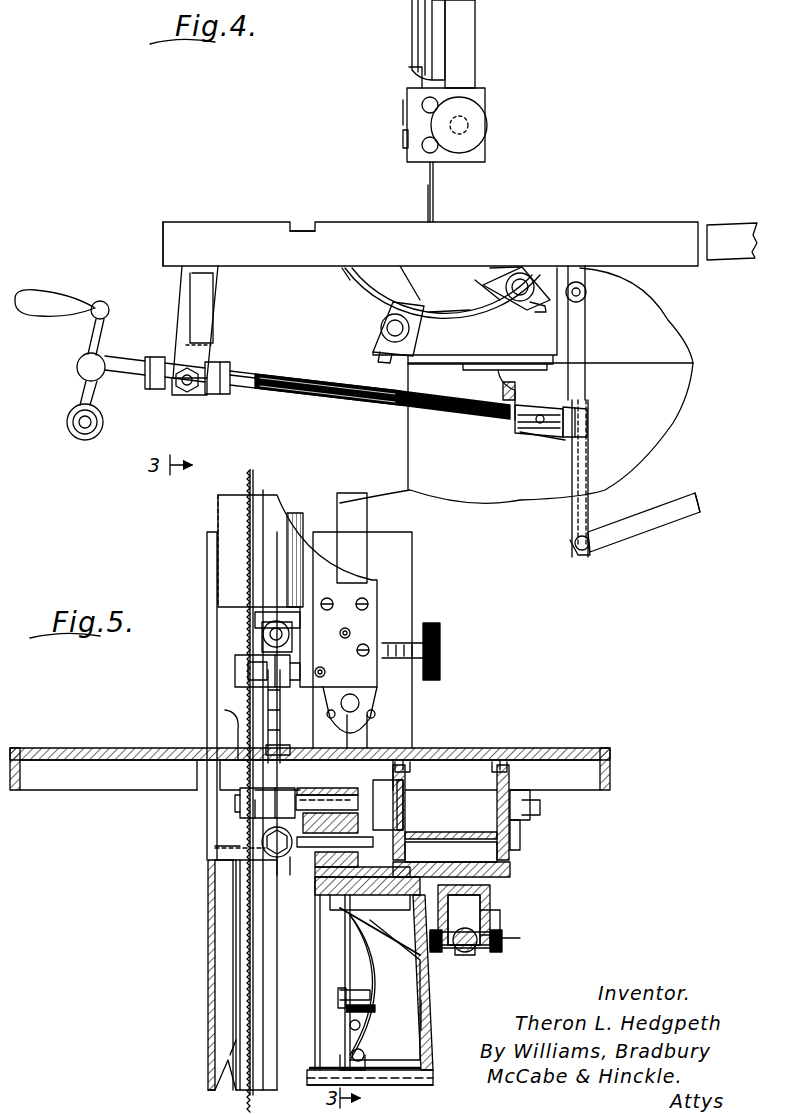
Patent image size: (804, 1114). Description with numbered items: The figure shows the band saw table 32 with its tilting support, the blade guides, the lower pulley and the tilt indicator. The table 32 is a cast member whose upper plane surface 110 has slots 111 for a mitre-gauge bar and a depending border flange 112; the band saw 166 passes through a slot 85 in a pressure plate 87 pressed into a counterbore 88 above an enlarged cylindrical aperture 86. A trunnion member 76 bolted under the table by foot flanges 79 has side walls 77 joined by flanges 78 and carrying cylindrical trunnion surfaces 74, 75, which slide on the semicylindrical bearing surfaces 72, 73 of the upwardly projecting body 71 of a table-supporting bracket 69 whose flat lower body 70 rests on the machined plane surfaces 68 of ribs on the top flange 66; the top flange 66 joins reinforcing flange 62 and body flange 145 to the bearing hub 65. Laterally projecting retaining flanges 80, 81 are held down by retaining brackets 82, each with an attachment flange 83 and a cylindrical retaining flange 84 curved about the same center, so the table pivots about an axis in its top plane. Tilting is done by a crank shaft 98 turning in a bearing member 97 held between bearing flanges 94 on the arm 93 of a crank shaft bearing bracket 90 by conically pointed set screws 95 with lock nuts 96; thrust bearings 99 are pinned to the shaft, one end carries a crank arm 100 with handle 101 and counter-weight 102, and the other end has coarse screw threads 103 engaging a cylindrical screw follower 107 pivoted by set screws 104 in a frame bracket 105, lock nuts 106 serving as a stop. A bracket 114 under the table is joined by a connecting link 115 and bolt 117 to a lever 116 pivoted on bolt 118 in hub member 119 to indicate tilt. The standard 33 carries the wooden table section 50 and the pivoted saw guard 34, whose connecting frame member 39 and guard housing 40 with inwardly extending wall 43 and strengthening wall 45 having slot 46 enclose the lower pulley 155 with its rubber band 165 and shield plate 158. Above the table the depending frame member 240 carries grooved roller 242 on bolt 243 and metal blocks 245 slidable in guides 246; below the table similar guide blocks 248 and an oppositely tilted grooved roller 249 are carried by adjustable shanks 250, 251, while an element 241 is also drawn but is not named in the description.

In FIG. 4, the table 32 is at (350, 212).
In FIG. 5, the table 32 is at (52, 747).
In FIG. 5, the standard 33 is at (405, 598).
In FIG. 5, the saw guard 34 is at (205, 1004).
In FIG. 5, the connecting frame member 39 is at (228, 622).
In FIG. 5, the guard housing 40 is at (225, 1046).
In FIG. 5, the radially inwardly extending wall 43 is at (207, 948).
In FIG. 5, the wall 45 is at (220, 852).
In FIG. 5, the slot 46 is at (235, 858).
In FIG. 4, the wooden table section 50 is at (745, 212).
In FIG. 5, the reinforcing flange 62 is at (430, 995).
In FIG. 5, the bearing-supporting hub 65 is at (378, 1078).
In FIG. 5, the top flange 66 is at (398, 1000).
In FIG. 5, the upper plane surfaces 68 is at (364, 987).
In FIG. 4, the table-supporting bracket 69 is at (445, 355).
In FIG. 5, the table-supporting bracket 69 is at (345, 932).
In FIG. 5, the lower body 70 is at (375, 925).
In FIG. 5, the upwardly projecting body 71 is at (393, 858).
In FIG. 4, the semicylindrical bearing surface 72 is at (500, 298).
In FIG. 5, the semicylindrical bearing surface 72 is at (405, 800).
In FIG. 5, the semicylindrical bearing surface 73 is at (535, 790).
In FIG. 4, the cylindrical trunnion surface 74 is at (462, 305).
In FIG. 5, the cylindrical trunnion surface 74 is at (405, 858).
In FIG. 5, the cylindrical trunnion surface 75 is at (510, 860).
In FIG. 4, the trunnion member 76 is at (420, 275).
In FIG. 5, the trunnion member 76 is at (500, 800).
In FIG. 4, the side walls 77 is at (388, 305).
In FIG. 5, the side walls 77 is at (405, 790).
In FIG. 5, the flanges 78 is at (460, 780).
In FIG. 5, the foot flanges 79 is at (398, 750).
In FIG. 4, the retaining flange 80 is at (350, 275).
In FIG. 5, the retaining flange 80 is at (515, 842).
In FIG. 5, the retaining flange 81 is at (393, 843).
In FIG. 4, the retaining bracket 82 is at (500, 272).
In FIG. 5, the retaining bracket 82 is at (370, 787).
In FIG. 4, the attachment flange 83 is at (415, 305).
In FIG. 4, the retaining flange 84 is at (388, 280).
In FIG. 5, the retaining flange 84 is at (410, 790).
In FIG. 4, the slot 85 is at (435, 218).
In FIG. 5, the slot 85 is at (225, 732).
In FIG. 5, the cylindrical aperture 86 is at (225, 760).
In FIG. 5, the pressure plate 87 is at (286, 742).
In FIG. 5, the counterbore 88 is at (282, 750).
In FIG. 4, the crank shaft bearing bracket 90 is at (180, 293).
In FIG. 4, the arm 93 is at (192, 316).
In FIG. 4, the bearing flanges 94 is at (175, 395).
In FIG. 4, the set screws 95 is at (215, 398).
In FIG. 5, the set screws 95 is at (500, 935).
In FIG. 4, the lock nuts 96 is at (187, 395).
In FIG. 4, the bearing member 97 is at (165, 360).
In FIG. 4, the crank shaft 98 is at (282, 385).
In FIG. 5, the crank shaft 98 is at (472, 958).
In FIG. 4, the thrust bearings 99 is at (235, 362).
In FIG. 4, the crank arm 100 is at (90, 312).
In FIG. 4, the handle 101 is at (50, 298).
In FIG. 4, the counter-weight 102 is at (70, 418).
In FIG. 4, the screw threads 103 is at (370, 406).
In FIG. 4, the set screws 104 is at (550, 434).
In FIG. 4, the bracket 105 is at (558, 393).
In FIG. 5, the bracket 105 is at (490, 938).
In FIG. 4, the lock nuts 106 is at (578, 412).
In FIG. 5, the lock nuts 106 is at (458, 955).
In FIG. 4, the screw follower 107 is at (560, 398).
In FIG. 5, the screw follower 107 is at (480, 940).
In FIG. 5, the upper plane surface 110 is at (110, 748).
In FIG. 4, the slot 111 is at (302, 224).
In FIG. 4, the depending border flange 112 is at (162, 240).
In FIG. 5, the depending border flange 112 is at (40, 795).
In FIG. 4, the bracket 114 is at (617, 280).
In FIG. 4, the connecting link 115 is at (588, 522).
In FIG. 5, the connecting link 115 is at (350, 1025).
In FIG. 4, the lever 116 is at (662, 518).
In FIG. 5, the lever 116 is at (355, 1055).
In FIG. 4, the bolt 117 is at (580, 558).
In FIG. 5, the bolt 117 is at (345, 1060).
In FIG. 5, the bolt 118 is at (338, 1002).
In FIG. 5, the hub member 119 is at (355, 988).
In FIG. 4, the body flange 145 is at (510, 495).
In FIG. 5, the body flange 145 is at (435, 1012).
In FIG. 5, the lower band saw pulley 155 is at (230, 1022).
In FIG. 5, the shield plate 158 is at (205, 1083).
In FIG. 5, the sheet rubber band 165 is at (236, 970).
In FIG. 4, the band saw 166 is at (435, 186).
In FIG. 5, the band saw 166 is at (250, 920).
In FIG. 4, the depending frame member 240 is at (476, 20).
In FIG. 5, the depending frame member 240 is at (365, 470).
In FIG. 5, the guide housing 241 is at (283, 610).
In FIG. 5, the grooved roller 242 is at (265, 612).
In FIG. 5, the bolt 243 is at (250, 628).
In FIG. 4, the metal blocks 245 is at (405, 136).
In FIG. 5, the metal blocks 245 is at (248, 672).
In FIG. 4, the guides 246 is at (405, 162).
In FIG. 5, the guides 246 is at (235, 662).
In FIG. 5, the guide blocks 248 is at (260, 798).
In FIG. 5, the grooved roller 249 is at (272, 850).
In FIG. 5, the shank 250 is at (310, 860).
In FIG. 5, the shank 251 is at (312, 887).